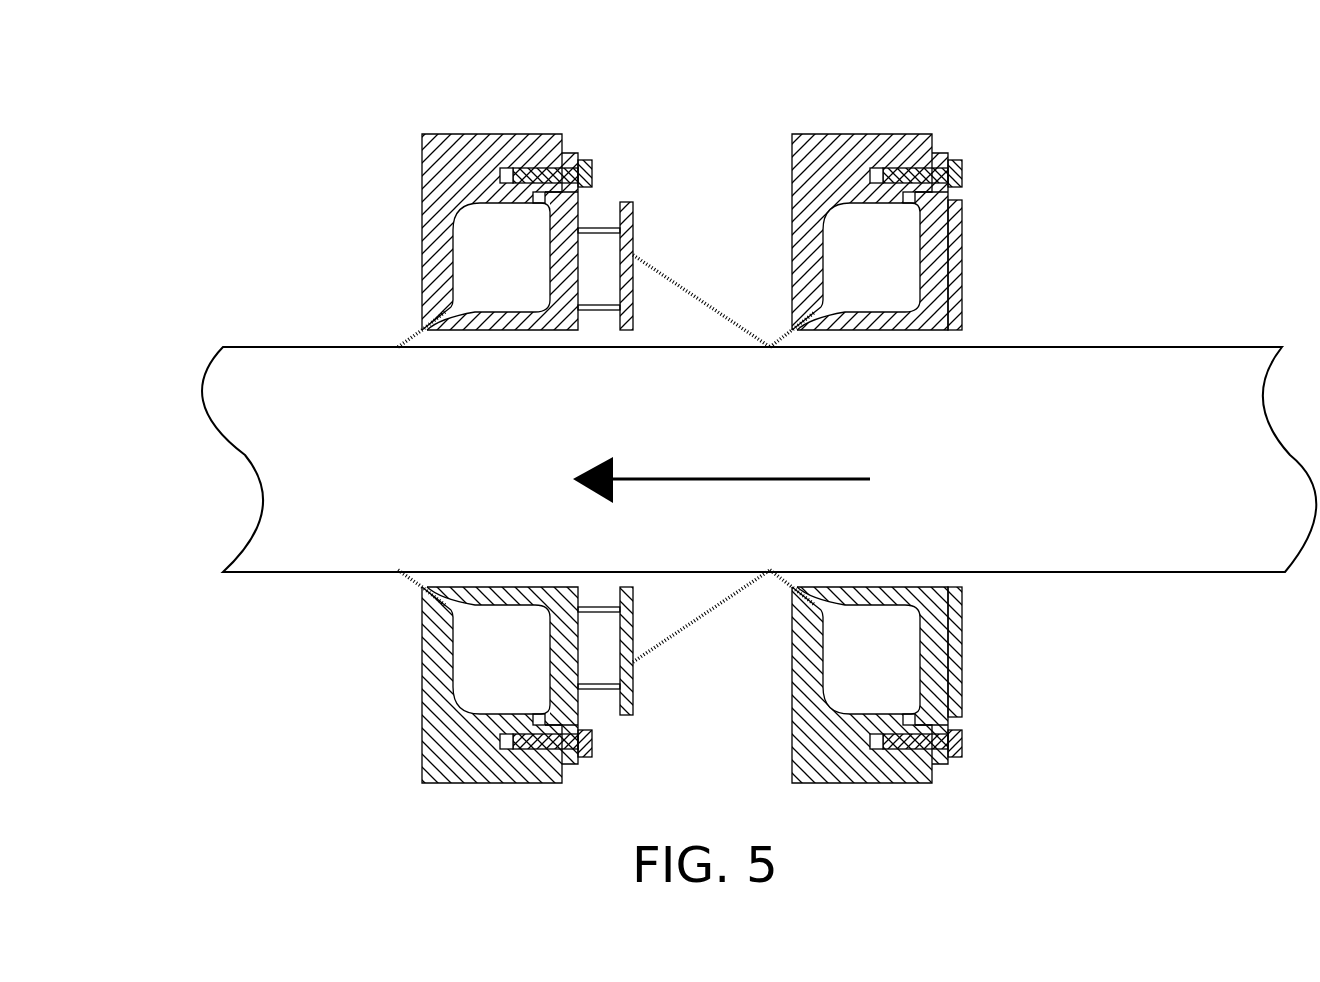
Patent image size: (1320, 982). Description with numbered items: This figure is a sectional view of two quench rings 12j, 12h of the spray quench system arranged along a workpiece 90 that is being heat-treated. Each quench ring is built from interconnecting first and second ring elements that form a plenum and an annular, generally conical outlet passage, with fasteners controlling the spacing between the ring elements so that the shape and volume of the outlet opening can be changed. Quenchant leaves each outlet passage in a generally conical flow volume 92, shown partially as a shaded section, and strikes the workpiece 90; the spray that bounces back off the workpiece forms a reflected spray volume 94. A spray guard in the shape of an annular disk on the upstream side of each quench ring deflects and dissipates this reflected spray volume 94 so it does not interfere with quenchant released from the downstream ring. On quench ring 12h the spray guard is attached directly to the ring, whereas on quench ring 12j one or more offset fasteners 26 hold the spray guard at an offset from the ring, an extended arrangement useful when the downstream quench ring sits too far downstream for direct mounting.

The quench ring 12j is at (508, 86).
The quench ring 12h is at (878, 83).
The offset fasteners 26 is at (600, 232).
The workpiece 90 is at (242, 387).
The flow volume 92 is at (405, 342).
The reflected spray volume 94 is at (677, 283).